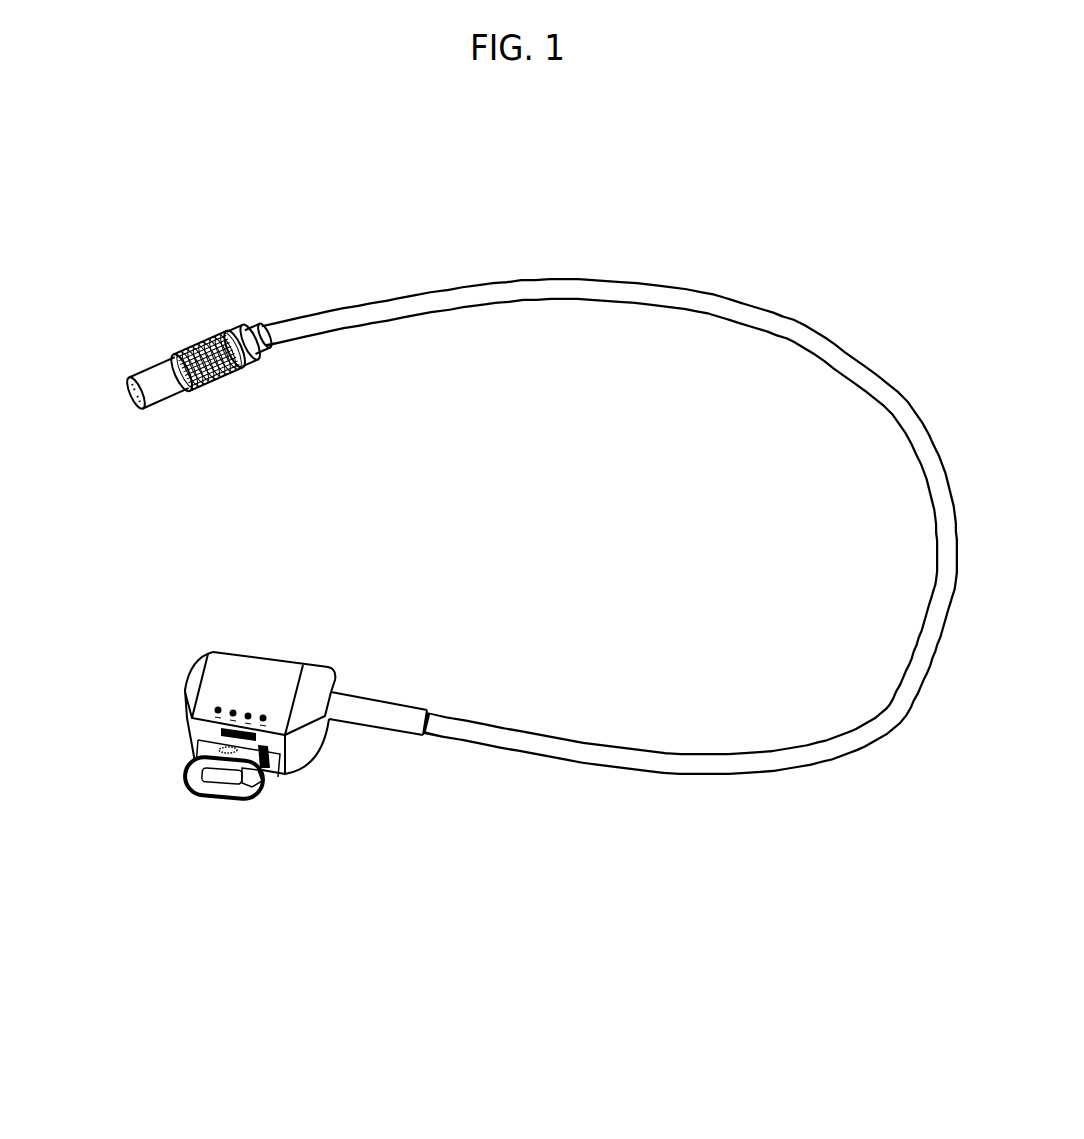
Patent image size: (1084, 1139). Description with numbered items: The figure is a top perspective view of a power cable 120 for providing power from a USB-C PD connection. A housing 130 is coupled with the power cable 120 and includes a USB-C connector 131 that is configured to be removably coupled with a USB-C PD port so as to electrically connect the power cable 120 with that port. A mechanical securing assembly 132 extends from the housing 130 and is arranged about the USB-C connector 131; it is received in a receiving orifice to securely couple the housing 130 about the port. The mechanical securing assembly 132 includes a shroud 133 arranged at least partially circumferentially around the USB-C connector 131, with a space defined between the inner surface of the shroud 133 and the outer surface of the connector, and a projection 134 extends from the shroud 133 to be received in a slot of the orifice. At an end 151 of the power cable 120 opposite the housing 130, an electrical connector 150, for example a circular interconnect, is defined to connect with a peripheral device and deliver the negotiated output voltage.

The power cable 120 is at (825, 270).
The housing 130 is at (180, 680).
The USB-C connector 131 is at (252, 797).
The mechanical securing assembly 132 is at (178, 777).
The shroud 133 is at (218, 793).
The projection 134 is at (272, 773).
The electrical connector 150 is at (152, 372).
The end 151 is at (297, 322).